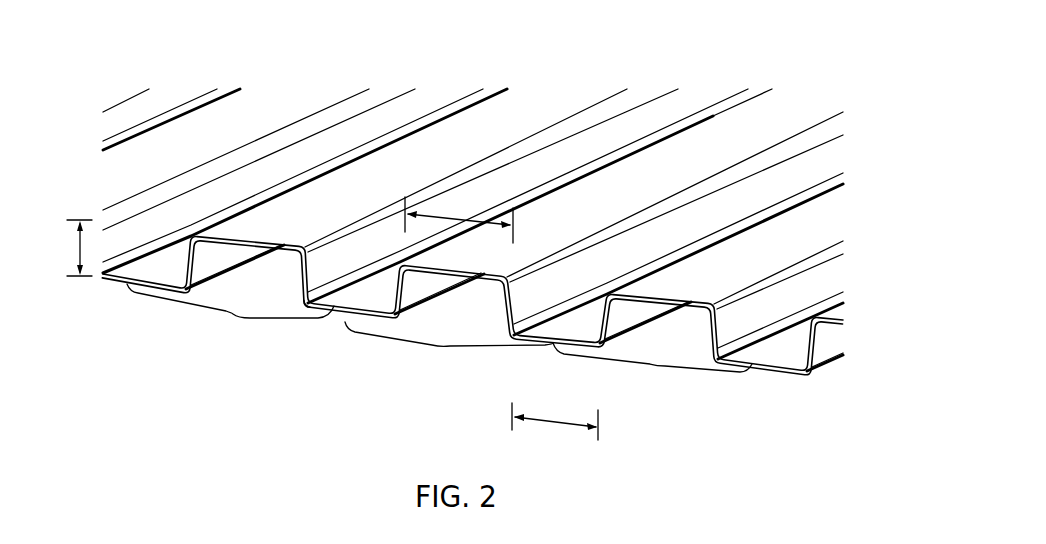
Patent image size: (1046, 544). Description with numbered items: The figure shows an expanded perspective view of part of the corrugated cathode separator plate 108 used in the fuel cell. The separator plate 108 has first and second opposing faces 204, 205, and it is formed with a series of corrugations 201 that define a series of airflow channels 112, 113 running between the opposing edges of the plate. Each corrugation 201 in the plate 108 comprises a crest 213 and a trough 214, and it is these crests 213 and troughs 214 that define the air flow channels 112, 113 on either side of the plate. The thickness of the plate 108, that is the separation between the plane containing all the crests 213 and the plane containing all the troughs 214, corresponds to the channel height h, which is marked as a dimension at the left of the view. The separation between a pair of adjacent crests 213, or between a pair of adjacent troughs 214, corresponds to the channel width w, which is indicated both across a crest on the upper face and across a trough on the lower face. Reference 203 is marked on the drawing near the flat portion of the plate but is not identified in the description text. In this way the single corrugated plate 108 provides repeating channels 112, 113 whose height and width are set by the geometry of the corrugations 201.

The cathode separator plate 108 is at (153, 77).
The airflow channel 112 is at (282, 296).
The airflow channel 113 is at (385, 304).
The corrugation 201 is at (233, 314).
The flat flange portion 203 is at (123, 277).
The first opposing face 204 is at (491, 220).
The second opposing face 205 is at (553, 343).
The crest 213 is at (276, 243).
The trough 214 is at (327, 307).